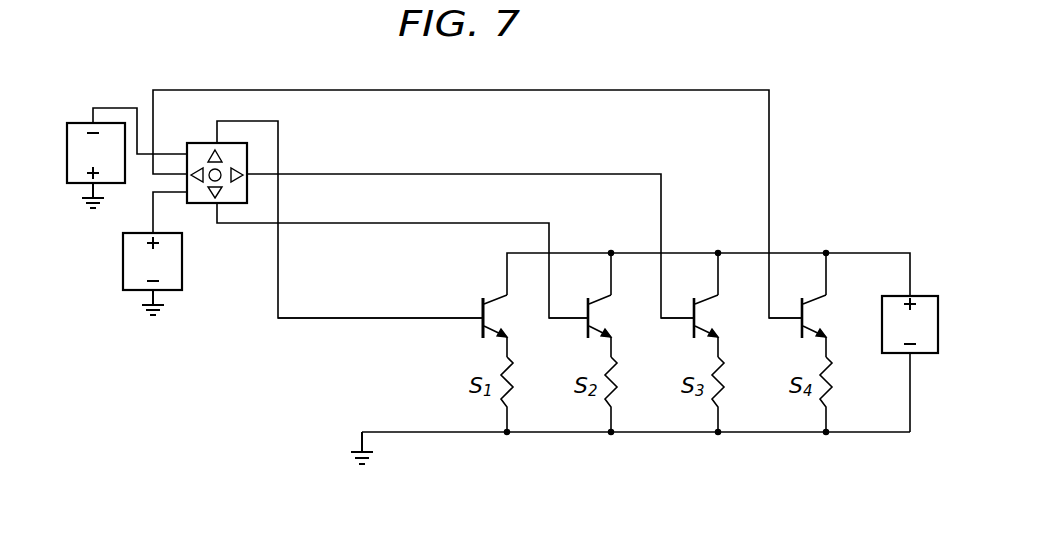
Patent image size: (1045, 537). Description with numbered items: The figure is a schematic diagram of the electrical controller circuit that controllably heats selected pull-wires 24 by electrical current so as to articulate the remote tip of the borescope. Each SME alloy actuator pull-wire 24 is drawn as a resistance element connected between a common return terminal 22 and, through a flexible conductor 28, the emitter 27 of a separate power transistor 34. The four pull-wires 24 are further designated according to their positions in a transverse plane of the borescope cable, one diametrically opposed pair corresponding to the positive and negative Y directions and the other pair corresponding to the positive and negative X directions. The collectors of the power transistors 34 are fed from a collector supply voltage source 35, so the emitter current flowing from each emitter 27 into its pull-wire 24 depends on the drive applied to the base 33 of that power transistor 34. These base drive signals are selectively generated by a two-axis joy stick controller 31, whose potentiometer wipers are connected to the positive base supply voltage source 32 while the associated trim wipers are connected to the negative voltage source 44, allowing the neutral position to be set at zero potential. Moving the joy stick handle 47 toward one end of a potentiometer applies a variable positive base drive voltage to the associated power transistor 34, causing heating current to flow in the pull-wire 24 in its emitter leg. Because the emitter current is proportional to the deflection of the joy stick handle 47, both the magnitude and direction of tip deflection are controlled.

The common return terminal 22 is at (680, 433).
The pull-wire 24 is at (513, 386).
The emitter 27 is at (507, 346).
The flexible conductor 28 is at (458, 434).
The joy stick controller 31 is at (206, 180).
The base supply voltage source 32 is at (123, 270).
The base 33 is at (474, 322).
The power transistor 34 is at (479, 291).
The collector supply voltage source 35 is at (928, 296).
The negative voltage source 44 is at (82, 122).
The joy stick handle 47 is at (212, 181).